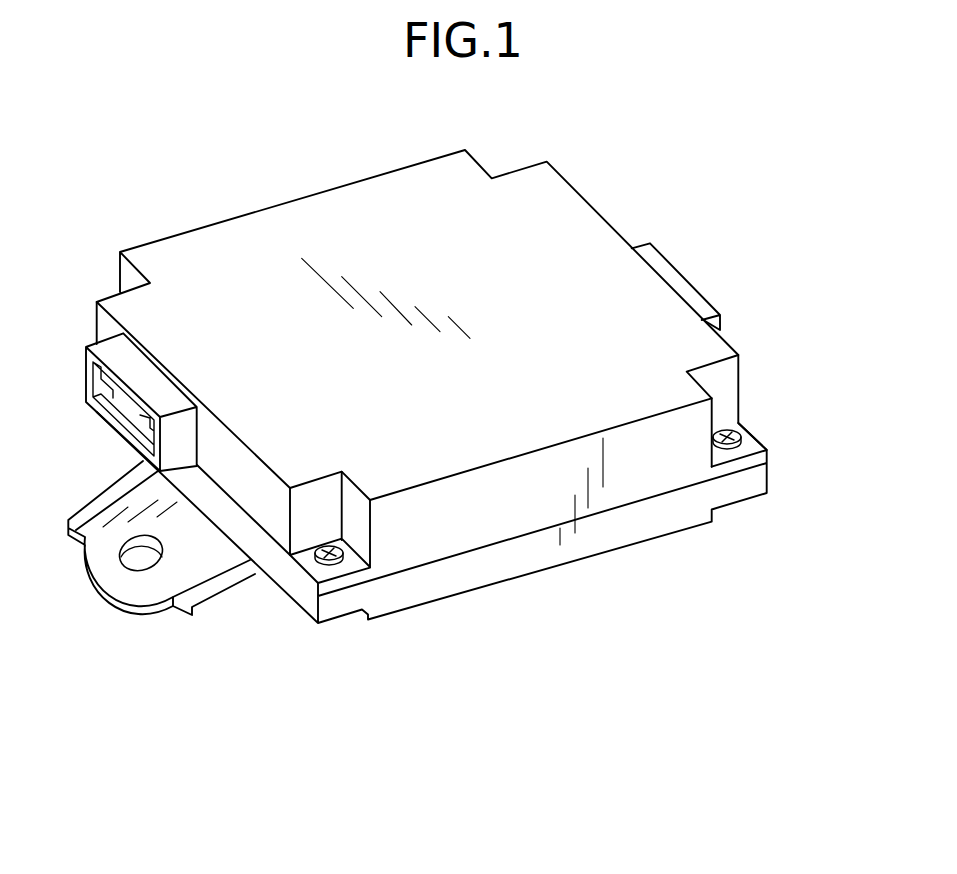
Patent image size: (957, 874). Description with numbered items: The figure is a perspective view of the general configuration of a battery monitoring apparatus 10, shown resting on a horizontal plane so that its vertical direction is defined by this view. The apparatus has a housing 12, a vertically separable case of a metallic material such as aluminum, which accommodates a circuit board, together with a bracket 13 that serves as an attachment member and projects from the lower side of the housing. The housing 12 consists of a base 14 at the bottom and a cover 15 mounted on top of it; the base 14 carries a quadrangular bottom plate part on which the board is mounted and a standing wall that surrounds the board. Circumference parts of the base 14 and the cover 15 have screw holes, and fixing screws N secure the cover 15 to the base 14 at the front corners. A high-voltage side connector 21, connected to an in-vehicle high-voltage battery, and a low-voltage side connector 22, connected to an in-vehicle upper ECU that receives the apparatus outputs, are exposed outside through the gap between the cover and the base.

The battery monitoring apparatus 10 is at (680, 163).
The housing 12 is at (847, 389).
The bracket 13 is at (160, 607).
The base 14 is at (767, 474).
The cover 15 is at (739, 381).
The high-voltage side connector 21 is at (91, 341).
The low-voltage side connector 22 is at (692, 283).
The fixing screws N is at (340, 568).